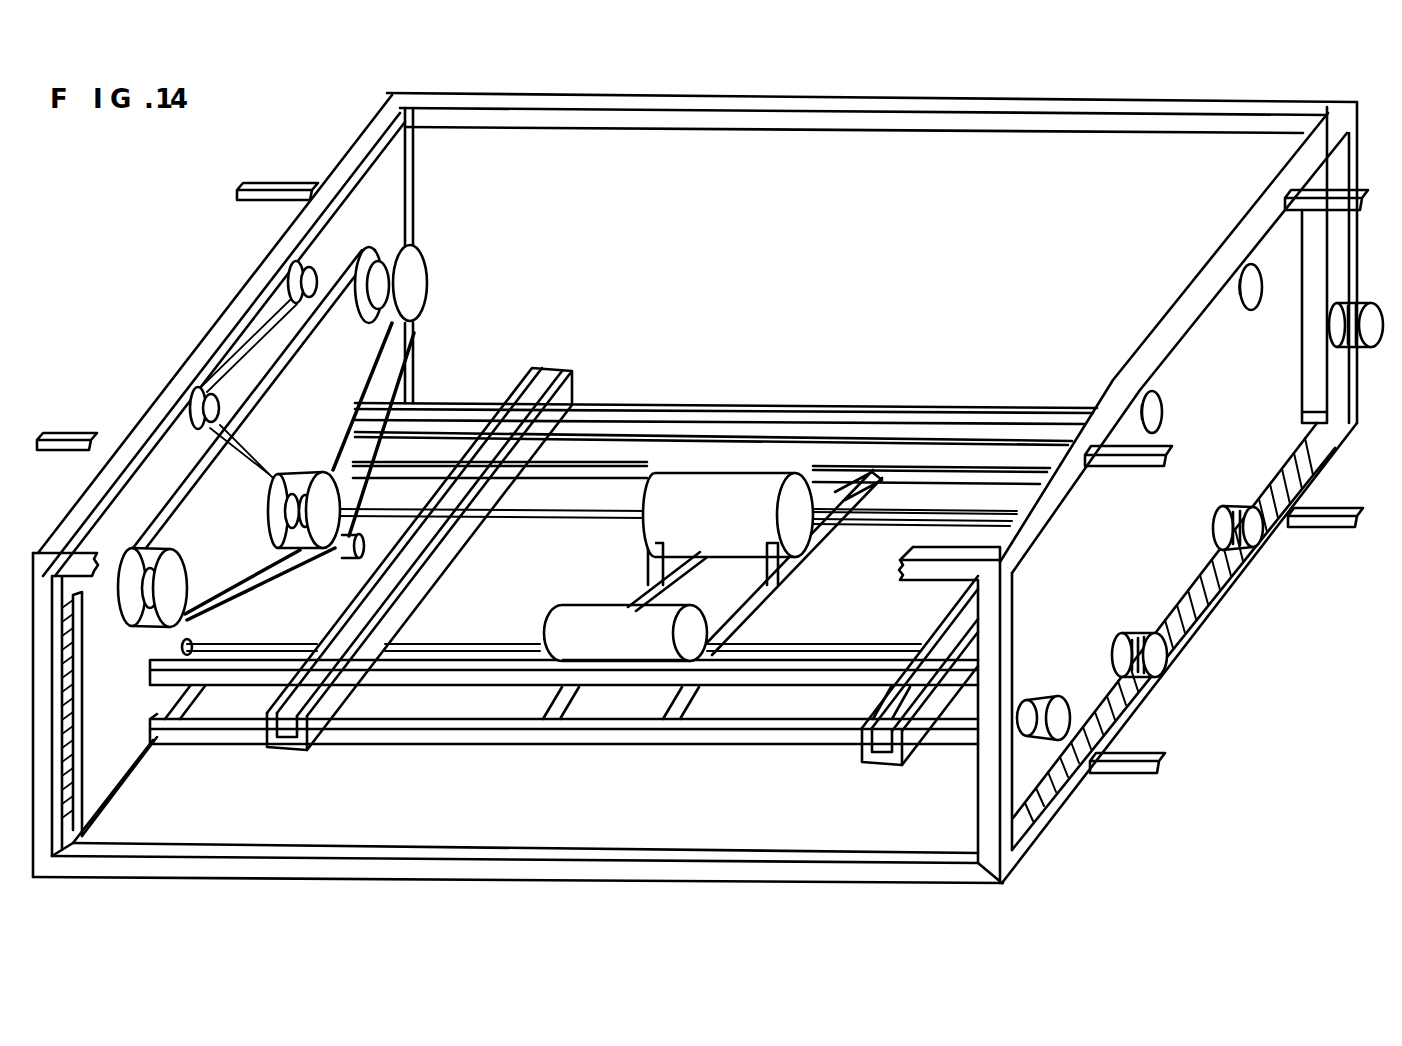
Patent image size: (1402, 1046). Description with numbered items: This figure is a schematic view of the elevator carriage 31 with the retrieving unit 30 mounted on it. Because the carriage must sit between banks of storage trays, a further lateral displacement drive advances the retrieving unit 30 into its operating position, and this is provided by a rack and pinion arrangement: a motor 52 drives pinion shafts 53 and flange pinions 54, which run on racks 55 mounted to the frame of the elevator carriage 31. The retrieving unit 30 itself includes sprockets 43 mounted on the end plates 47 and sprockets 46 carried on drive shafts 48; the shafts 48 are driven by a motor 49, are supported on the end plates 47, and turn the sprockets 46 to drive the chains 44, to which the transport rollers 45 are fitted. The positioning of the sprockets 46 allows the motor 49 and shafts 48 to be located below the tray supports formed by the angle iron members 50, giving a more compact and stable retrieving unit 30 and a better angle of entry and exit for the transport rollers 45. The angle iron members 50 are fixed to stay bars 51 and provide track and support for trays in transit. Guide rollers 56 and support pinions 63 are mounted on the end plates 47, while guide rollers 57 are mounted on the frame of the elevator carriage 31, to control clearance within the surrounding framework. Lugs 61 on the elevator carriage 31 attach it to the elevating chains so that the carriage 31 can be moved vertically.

The retrieving unit 30 is at (569, 772).
The elevator carriage 31 is at (700, 853).
The sprockets 43 is at (430, 293).
The chains 44 is at (283, 421).
The transport rollers 45 is at (337, 560).
The sprockets 46 is at (268, 517).
The end plates 47 is at (655, 646).
The drive shafts 48 is at (577, 517).
The motor 49 is at (728, 529).
The angle iron members 50 is at (557, 393).
The stay bars 51 is at (380, 745).
The motor 52 is at (625, 633).
The pinion shafts 53 is at (822, 648).
The flange pinions 54 is at (1118, 632).
The racks 55 is at (1197, 608).
The guide rollers 56 is at (1248, 308).
The guide rollers 57 is at (1030, 700).
The lugs 61 is at (1322, 523).
The support pinions 63 is at (1213, 525).